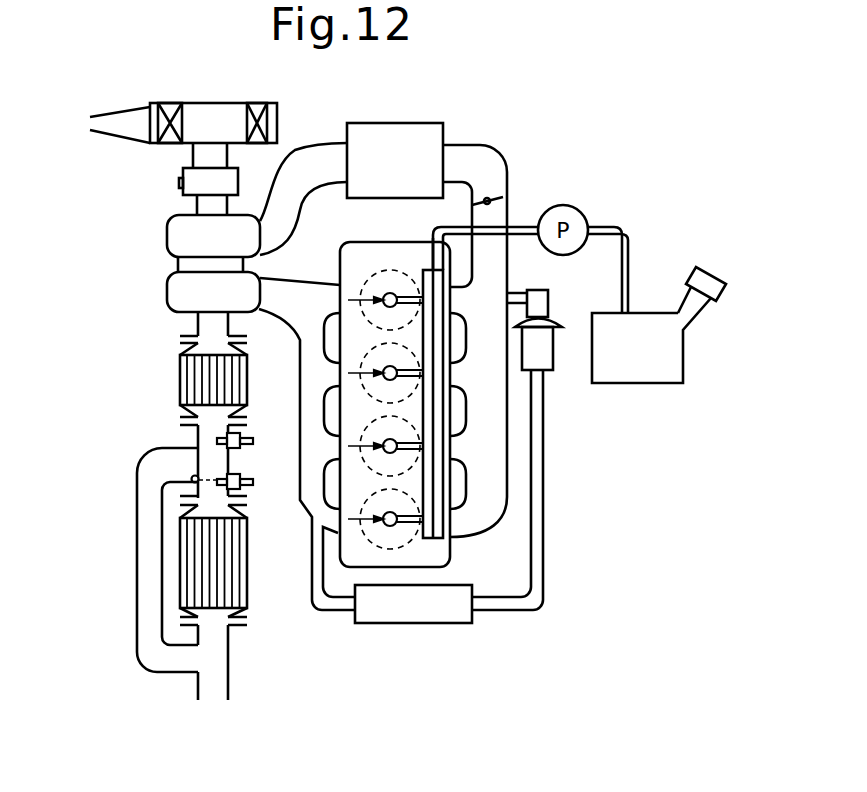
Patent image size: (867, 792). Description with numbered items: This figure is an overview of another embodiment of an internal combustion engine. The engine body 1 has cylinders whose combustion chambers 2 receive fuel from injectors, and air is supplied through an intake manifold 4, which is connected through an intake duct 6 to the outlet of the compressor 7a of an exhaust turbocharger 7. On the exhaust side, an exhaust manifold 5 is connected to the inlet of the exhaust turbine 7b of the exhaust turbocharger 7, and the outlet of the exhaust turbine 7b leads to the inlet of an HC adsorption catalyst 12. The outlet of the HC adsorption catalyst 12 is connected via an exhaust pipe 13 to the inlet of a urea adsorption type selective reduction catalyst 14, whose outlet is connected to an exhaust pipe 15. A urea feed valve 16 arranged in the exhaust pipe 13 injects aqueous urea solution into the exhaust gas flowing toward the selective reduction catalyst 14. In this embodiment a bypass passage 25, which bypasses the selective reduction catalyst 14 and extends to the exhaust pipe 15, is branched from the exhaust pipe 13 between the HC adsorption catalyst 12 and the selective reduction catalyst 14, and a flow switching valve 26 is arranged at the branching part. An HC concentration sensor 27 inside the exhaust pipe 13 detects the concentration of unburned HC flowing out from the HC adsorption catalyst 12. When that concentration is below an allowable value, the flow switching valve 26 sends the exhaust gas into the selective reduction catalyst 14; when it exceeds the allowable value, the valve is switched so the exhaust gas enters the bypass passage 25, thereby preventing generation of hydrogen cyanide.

The engine body 1 is at (464, 570).
The combustion chamber 2 is at (380, 283).
The intake manifold 4 is at (487, 502).
The exhaust manifold 5 is at (316, 374).
The intake duct 6 is at (483, 163).
The exhaust turbocharger 7 is at (150, 262).
The compressor 7a is at (177, 235).
The exhaust turbine 7b is at (180, 292).
The HC adsorption catalyst 12 is at (192, 381).
The exhaust pipe 13 is at (202, 437).
The selective reduction catalyst 14 is at (240, 578).
The exhaust pipe 15 is at (225, 680).
The urea feed valve 16 is at (233, 483).
The bypass passage 25 is at (148, 598).
The flow switching valve 26 is at (191, 478).
The HC concentration sensor 27 is at (233, 437).